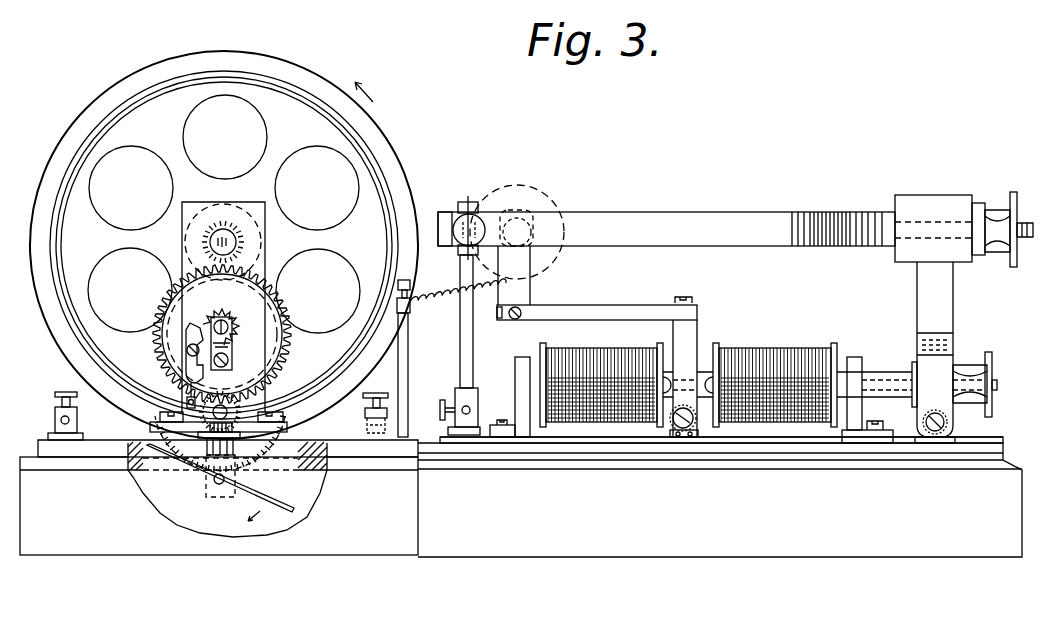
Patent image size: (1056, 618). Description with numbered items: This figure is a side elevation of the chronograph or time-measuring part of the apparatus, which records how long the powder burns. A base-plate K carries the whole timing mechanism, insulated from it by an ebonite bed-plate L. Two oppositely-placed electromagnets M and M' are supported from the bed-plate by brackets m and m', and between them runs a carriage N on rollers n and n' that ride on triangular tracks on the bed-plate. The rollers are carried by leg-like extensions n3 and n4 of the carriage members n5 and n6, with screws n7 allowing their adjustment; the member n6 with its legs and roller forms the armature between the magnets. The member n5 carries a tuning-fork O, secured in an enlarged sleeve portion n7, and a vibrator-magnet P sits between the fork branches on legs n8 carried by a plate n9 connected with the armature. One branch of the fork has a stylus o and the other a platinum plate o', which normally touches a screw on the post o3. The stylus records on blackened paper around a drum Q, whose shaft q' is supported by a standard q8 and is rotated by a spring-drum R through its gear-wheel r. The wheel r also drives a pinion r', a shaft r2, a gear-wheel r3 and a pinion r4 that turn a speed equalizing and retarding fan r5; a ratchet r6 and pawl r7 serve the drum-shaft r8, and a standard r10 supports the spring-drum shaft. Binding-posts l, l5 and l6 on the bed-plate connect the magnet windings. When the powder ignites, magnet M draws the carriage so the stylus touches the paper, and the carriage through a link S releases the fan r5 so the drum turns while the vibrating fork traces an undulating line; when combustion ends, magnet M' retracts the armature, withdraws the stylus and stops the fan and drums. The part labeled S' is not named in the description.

The drum Q is at (293, 80).
The shaft q' is at (223, 227).
The standard q8 is at (224, 317).
The spring-drum R is at (267, 320).
The gear-wheel r is at (237, 334).
The pinion r' is at (229, 410).
The shaft r2 is at (213, 413).
The gear-wheel r3 is at (280, 383).
The pinion r4 is at (220, 488).
The speed equalizing and retarding fan r5 is at (272, 506).
The ratchet r6 is at (220, 310).
The pawl r7 is at (199, 328).
The drum-shaft r8 is at (232, 327).
The standard r10 is at (211, 339).
The binding-post l is at (990, 440).
The binding-post l5 is at (412, 283).
The binding-post l6 is at (366, 413).
The stylus o is at (456, 219).
The platinum plate o' is at (469, 212).
The post o3 is at (460, 355).
The vibrator-magnet P is at (540, 198).
The tuning-fork O is at (843, 213).
The leg-like extension n3 is at (926, 400).
The leg-like extension n4 is at (668, 440).
The carriage member n5 is at (955, 305).
The carriage member n6 is at (698, 327).
The enlarged sleeve portion n7 is at (938, 196).
The legs n8 is at (526, 287).
The plate n9 is at (597, 303).
The roller n is at (918, 471).
The roller n' is at (694, 464).
The carriage N is at (941, 362).
The electromagnet M is at (605, 374).
The electromagnet M' is at (775, 374).
The bracket m is at (508, 397).
The bracket m' is at (874, 393).
The link S is at (219, 496).
The base block S' is at (720, 500).
The base-plate K is at (721, 478).
The bed-plate L is at (967, 453).